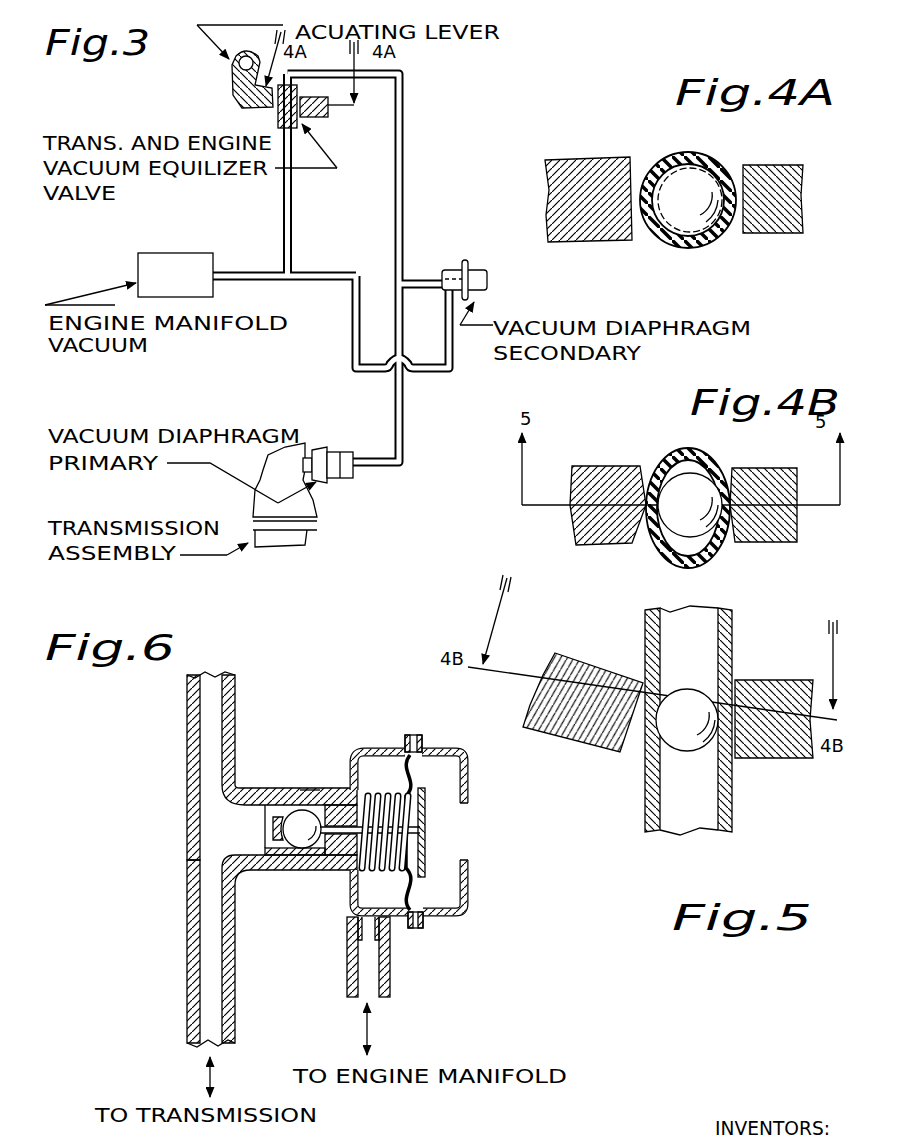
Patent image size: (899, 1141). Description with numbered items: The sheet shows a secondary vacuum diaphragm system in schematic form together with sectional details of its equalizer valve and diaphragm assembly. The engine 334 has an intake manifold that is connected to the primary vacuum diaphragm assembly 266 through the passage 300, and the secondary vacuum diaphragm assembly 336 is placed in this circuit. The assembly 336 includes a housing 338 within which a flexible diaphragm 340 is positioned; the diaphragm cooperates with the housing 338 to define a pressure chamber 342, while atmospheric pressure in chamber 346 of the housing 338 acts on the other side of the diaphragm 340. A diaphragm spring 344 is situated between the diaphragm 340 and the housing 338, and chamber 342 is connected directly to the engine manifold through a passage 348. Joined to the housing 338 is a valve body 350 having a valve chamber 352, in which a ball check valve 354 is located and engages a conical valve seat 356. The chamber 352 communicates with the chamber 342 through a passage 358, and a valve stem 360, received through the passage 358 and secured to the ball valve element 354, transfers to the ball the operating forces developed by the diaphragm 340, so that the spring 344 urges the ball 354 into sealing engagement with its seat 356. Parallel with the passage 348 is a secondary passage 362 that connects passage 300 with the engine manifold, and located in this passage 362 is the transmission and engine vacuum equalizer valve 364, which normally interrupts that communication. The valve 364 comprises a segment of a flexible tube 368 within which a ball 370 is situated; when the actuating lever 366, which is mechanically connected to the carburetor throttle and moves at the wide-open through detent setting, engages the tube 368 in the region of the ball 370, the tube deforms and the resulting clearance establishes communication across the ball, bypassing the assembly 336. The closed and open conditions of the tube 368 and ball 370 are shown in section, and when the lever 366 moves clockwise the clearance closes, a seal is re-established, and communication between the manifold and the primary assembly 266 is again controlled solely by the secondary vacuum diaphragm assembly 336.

In FIG. 3, the primary vacuum diaphragm assembly 266 is at (345, 484).
In FIG. 3, the passage 300 is at (393, 453).
In FIG. 6, the passage 300 is at (200, 890).
In FIG. 3, the engine 334 is at (193, 257).
In FIG. 3, the secondary vacuum diaphragm assembly 336 is at (480, 266).
In FIG. 6, the secondary vacuum diaphragm assembly 336 is at (380, 748).
In FIG. 6, the housing 338 is at (445, 922).
In FIG. 6, the flexible diaphragm 340 is at (428, 744).
In FIG. 6, the pressure chamber 342 is at (372, 890).
In FIG. 6, the diaphragm spring 344 is at (420, 822).
In FIG. 6, the chamber 346 is at (440, 777).
In FIG. 3, the passage 348 is at (446, 376).
In FIG. 6, the passage 348 is at (366, 966).
In FIG. 6, the valve body 350 is at (312, 788).
In FIG. 6, the valve chamber 352 is at (275, 868).
In FIG. 6, the ball check valve 354 is at (297, 811).
In FIG. 6, the conical valve seat 356 is at (296, 852).
In FIG. 6, the passage 358 is at (335, 838).
In FIG. 6, the valve stem 360 is at (428, 848).
In FIG. 3, the secondary passage 362 is at (403, 150).
In FIG. 6, the secondary passage 362 is at (200, 718).
In FIG. 3, the transmission and engine vacuum equalizer valve 364 is at (276, 113).
In FIG. 4A, the transmission and engine vacuum equalizer valve 364 is at (773, 199).
In FIG. 4B, the transmission and engine vacuum equalizer valve 364 is at (763, 525).
In FIG. 5, the transmission and engine vacuum equalizer valve 364 is at (738, 771).
In FIG. 3, the actuating lever 366 is at (232, 76).
In FIG. 4A, the actuating lever 366 is at (597, 139).
In FIG. 4B, the actuating lever 366 is at (603, 472).
In FIG. 5, the actuating lever 366 is at (575, 666).
In FIG. 4A, the flexible tube 368 is at (703, 153).
In FIG. 4B, the flexible tube 368 is at (690, 452).
In FIG. 5, the flexible tube 368 is at (734, 648).
In FIG. 4A, the ball 370 is at (714, 178).
In FIG. 4B, the ball 370 is at (702, 488).
In FIG. 5, the ball 370 is at (668, 742).